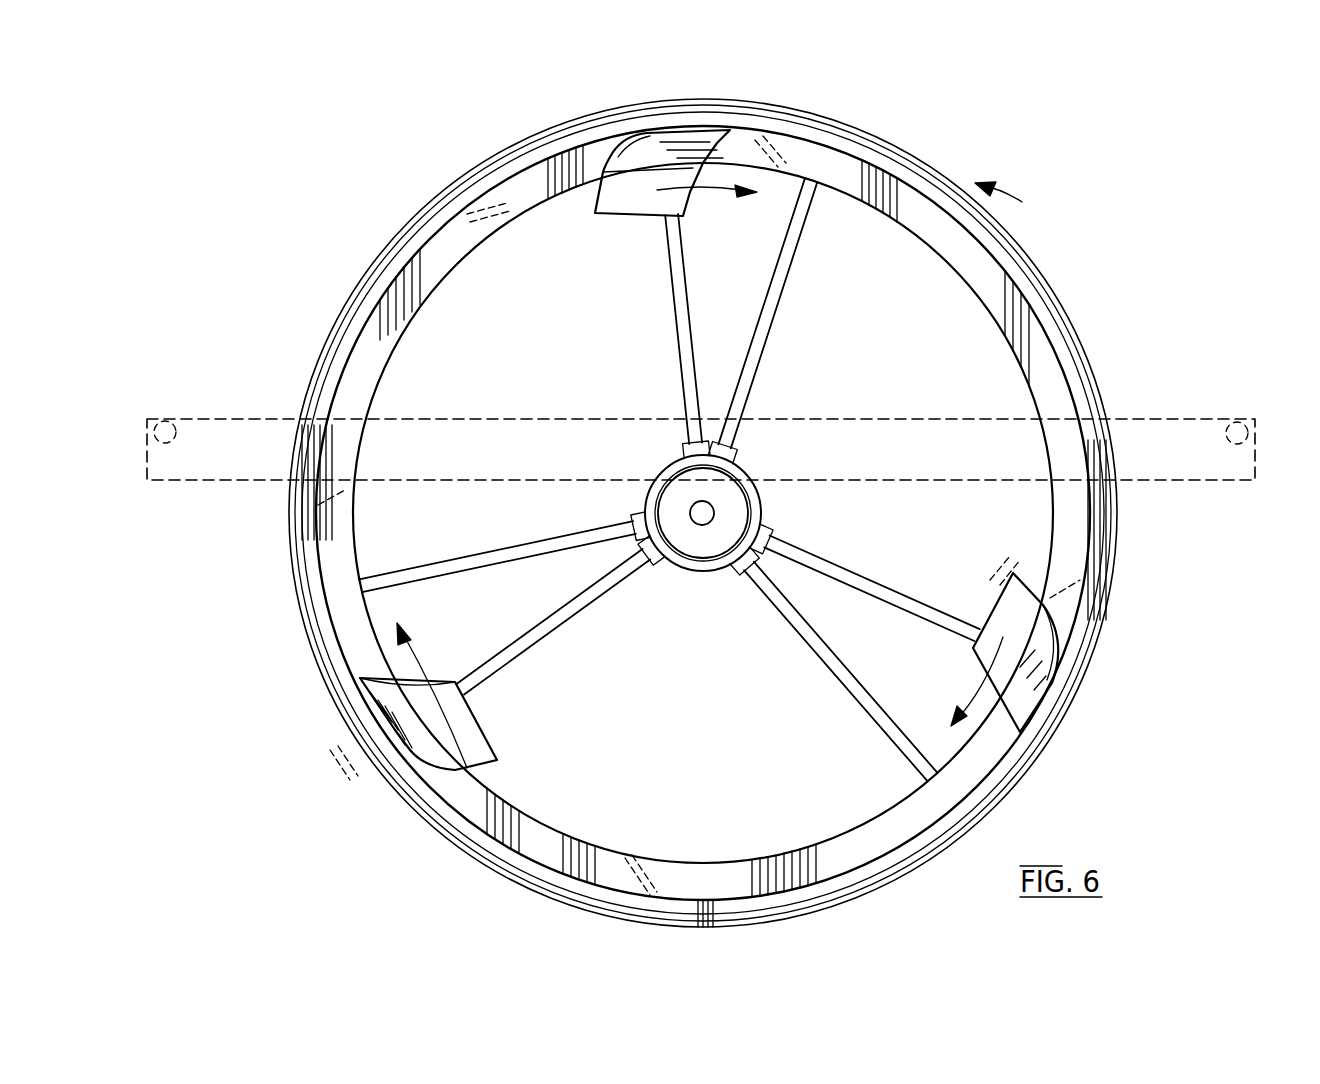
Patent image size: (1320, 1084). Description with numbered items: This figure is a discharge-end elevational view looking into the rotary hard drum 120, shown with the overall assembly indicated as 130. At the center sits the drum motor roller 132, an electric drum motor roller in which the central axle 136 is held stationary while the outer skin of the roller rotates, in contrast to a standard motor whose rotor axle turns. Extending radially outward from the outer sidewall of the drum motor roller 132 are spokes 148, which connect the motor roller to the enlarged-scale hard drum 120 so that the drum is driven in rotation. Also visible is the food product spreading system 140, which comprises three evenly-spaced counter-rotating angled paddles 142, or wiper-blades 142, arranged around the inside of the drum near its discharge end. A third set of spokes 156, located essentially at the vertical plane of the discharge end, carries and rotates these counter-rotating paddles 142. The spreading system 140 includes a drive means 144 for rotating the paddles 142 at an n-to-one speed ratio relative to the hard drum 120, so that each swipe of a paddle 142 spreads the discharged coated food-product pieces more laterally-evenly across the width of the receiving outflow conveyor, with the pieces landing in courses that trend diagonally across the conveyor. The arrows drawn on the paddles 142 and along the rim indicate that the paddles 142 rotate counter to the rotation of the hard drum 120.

The rotary hard drum 120 is at (876, 138).
The impeller 130 is at (413, 165).
The drum motor roller 132 is at (748, 470).
The central axle 136 is at (698, 510).
The food product spreading system 140 is at (327, 662).
The angled paddle 142 is at (728, 128).
The drive means 144 is at (668, 470).
The downline spokes 148 is at (773, 320).
The third set of spokes 156 is at (690, 352).